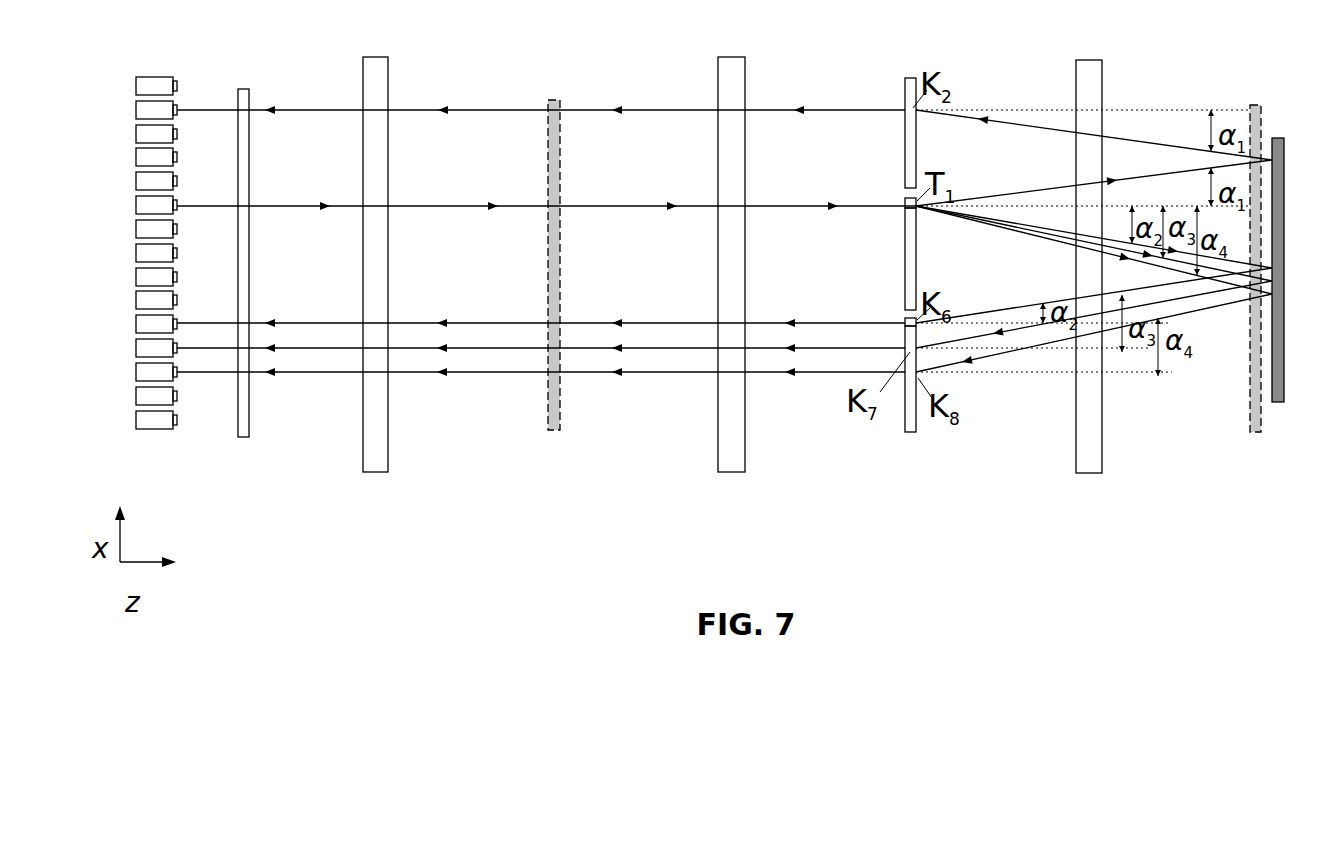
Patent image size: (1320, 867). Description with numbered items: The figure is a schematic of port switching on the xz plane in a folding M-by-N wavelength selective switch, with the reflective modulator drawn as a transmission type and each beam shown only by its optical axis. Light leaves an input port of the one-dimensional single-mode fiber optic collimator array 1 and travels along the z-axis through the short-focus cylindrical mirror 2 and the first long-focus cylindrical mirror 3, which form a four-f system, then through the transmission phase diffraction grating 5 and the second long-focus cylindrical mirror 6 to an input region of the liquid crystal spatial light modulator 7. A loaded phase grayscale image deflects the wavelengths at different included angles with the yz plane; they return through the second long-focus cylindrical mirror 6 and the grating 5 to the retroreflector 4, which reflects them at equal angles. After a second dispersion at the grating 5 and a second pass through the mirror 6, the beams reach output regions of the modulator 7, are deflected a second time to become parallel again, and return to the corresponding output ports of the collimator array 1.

The one-dimensional single-mode fiber optic collimator array 1 is at (153, 429).
The short-focus cylindrical mirror 2 is at (240, 437).
The first long-focus cylindrical mirror 3 is at (373, 472).
The retroreflector 4 is at (1278, 402).
The transmission phase diffraction grating 5 is at (553, 430).
The second long-focus cylindrical mirror 6 is at (732, 472).
The liquid crystal spatial light modulator 7 is at (908, 432).